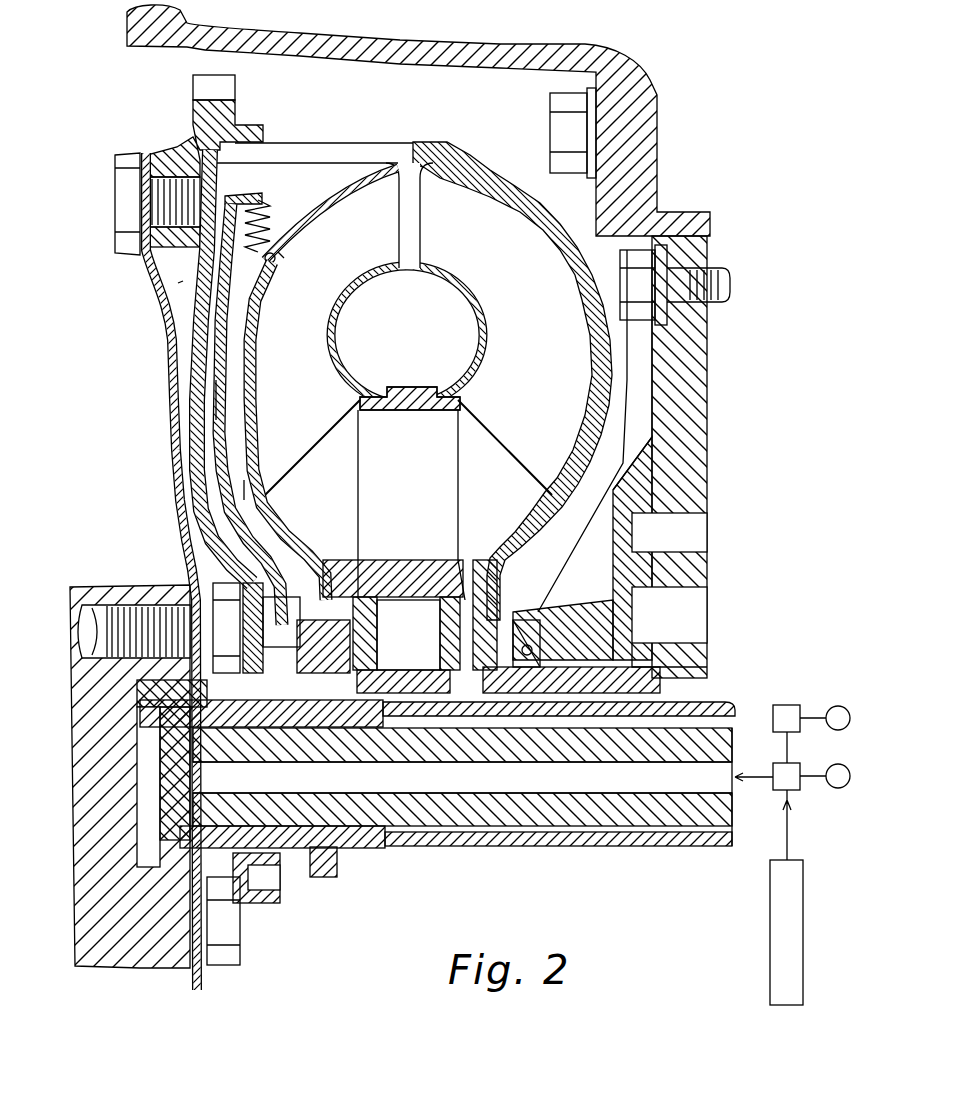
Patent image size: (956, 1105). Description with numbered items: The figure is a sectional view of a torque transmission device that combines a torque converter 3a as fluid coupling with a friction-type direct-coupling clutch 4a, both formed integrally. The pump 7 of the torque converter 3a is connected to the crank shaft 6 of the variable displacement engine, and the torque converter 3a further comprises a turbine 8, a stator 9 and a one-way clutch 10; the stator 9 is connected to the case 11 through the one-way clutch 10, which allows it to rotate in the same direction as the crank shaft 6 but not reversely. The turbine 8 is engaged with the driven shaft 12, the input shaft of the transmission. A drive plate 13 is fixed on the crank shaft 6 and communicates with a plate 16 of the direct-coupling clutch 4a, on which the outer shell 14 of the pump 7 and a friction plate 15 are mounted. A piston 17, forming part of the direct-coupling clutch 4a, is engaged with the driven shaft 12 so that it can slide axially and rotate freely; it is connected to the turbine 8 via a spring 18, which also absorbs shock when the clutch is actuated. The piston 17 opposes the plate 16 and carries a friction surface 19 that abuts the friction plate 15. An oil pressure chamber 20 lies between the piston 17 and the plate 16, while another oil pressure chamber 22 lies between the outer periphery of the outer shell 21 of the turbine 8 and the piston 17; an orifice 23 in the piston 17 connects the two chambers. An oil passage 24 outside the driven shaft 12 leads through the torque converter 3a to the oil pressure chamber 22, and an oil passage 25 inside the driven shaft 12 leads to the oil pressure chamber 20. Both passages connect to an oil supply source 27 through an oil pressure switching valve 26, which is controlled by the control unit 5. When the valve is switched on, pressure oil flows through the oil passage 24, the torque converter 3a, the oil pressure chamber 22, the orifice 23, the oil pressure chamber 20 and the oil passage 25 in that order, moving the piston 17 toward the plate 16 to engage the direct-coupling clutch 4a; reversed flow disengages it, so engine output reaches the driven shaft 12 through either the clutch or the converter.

The torque converter 3a is at (418, 341).
The case 11 is at (560, 46).
The outer shell of the turbine 21 is at (363, 185).
The pump 7 is at (493, 213).
The turbine 8 is at (340, 215).
The spring 18 is at (262, 206).
The outer shell of the pump 14 is at (558, 232).
The friction plate 15 is at (220, 257).
The direct-coupling clutch 4a is at (178, 281).
The oil pressure chamber 22 is at (227, 330).
The drive plate 13 is at (168, 372).
The orifice 23 is at (218, 418).
The plate 16 is at (192, 467).
The oil pressure chamber 20 is at (222, 494).
The piston 17 is at (240, 505).
The friction surface 19 is at (237, 280).
The stator 9 is at (357, 484).
The one-way clutch 10 is at (402, 648).
The crank shaft 6 is at (72, 708).
The oil passage 25 is at (462, 787).
The driven shaft 12 is at (726, 806).
The oil passage 24 is at (660, 697).
The oil pressure switching valve 26 is at (795, 699).
The oil supply source 27 is at (865, 776).
The control unit 5 is at (804, 928).